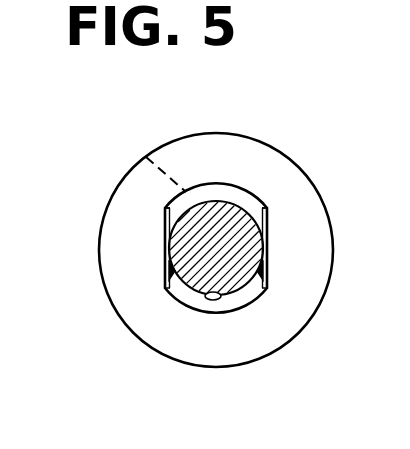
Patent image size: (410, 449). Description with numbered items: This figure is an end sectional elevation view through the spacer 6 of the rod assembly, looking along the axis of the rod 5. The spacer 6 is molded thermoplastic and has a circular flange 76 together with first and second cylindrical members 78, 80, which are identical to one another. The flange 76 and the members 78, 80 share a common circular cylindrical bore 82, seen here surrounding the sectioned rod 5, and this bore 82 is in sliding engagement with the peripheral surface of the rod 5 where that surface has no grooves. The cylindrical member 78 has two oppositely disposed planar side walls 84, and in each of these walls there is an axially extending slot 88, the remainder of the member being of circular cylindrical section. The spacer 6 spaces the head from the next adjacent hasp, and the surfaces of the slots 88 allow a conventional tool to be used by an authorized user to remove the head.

The rod 5 is at (238, 262).
The spacer 6 is at (299, 154).
The circular flange 76 is at (323, 203).
The first cylindrical member 78 is at (234, 190).
The second cylindrical member 80 is at (146, 157).
The circular cylindrical bore 82 is at (224, 297).
The planar side walls 84 is at (268, 229).
The axially extending slot 88 is at (266, 272).